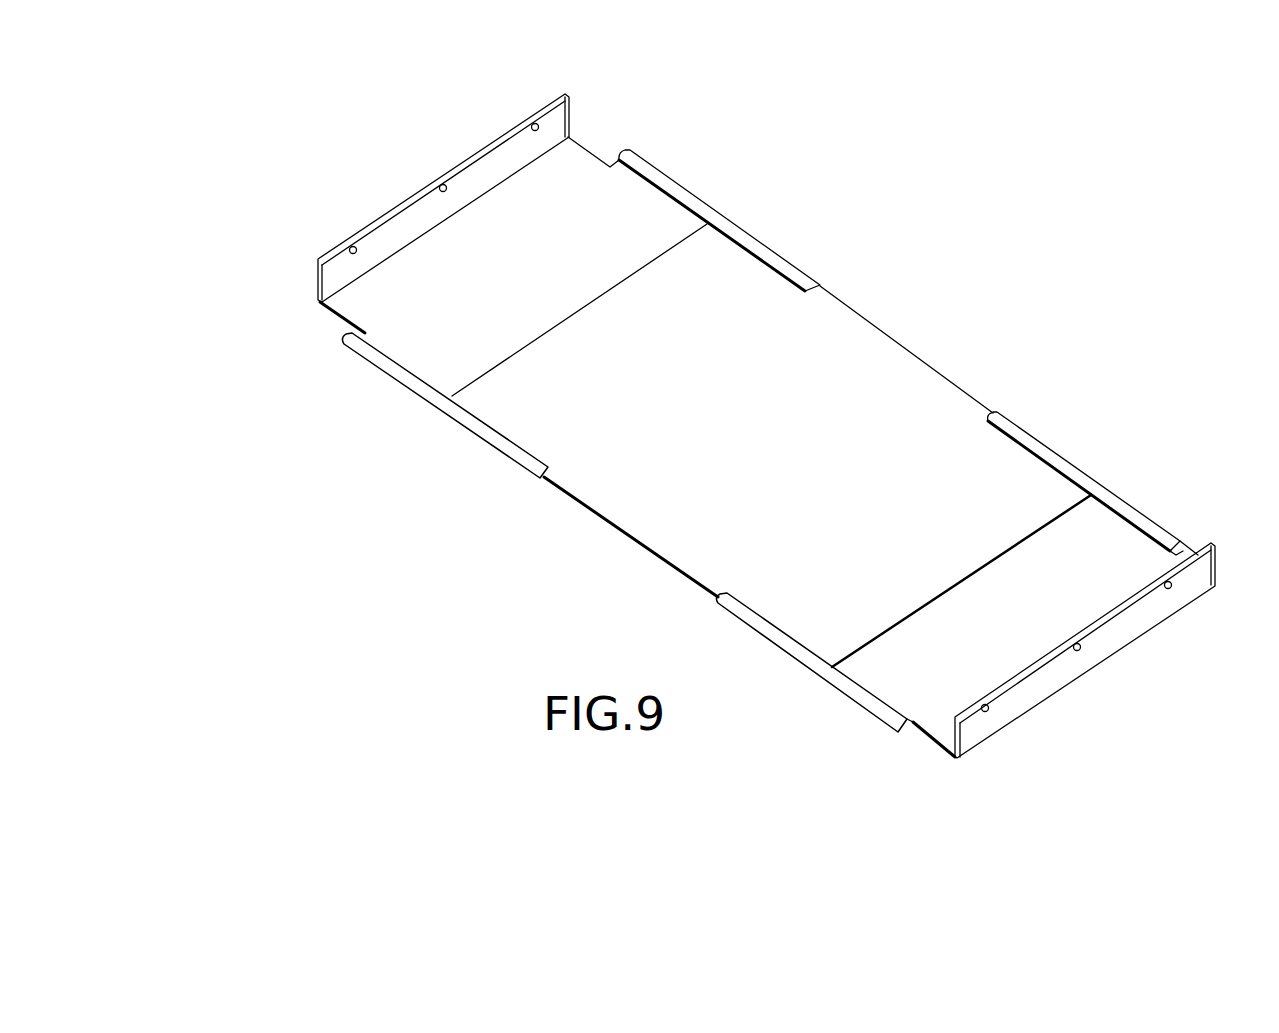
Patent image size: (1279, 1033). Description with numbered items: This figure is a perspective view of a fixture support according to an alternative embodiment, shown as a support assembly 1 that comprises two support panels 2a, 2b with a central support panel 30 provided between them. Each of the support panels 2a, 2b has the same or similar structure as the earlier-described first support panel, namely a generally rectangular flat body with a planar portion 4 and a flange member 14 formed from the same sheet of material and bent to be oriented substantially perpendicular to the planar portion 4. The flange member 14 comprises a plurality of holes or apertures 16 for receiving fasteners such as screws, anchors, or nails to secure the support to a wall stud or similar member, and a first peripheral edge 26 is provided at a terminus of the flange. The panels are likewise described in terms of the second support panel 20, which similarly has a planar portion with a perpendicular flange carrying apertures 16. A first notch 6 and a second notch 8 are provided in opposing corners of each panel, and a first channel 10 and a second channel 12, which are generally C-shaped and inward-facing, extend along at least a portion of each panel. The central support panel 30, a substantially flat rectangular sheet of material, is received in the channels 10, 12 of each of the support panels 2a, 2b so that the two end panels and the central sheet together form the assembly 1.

The support assembly 1 is at (984, 317).
The support panel 2a is at (327, 348).
The support panel 2b is at (872, 740).
The planar portion 4 is at (408, 333).
The first notch 6 is at (330, 316).
The second notch 8 is at (588, 137).
The first channel 10 is at (457, 428).
The second channel 12 is at (752, 235).
The flange member 14 is at (490, 150).
The apertures 16 is at (353, 246).
The second support panel 20 is at (663, 150).
The first peripheral edge 26 is at (1153, 517).
The central support panel 30 is at (645, 520).